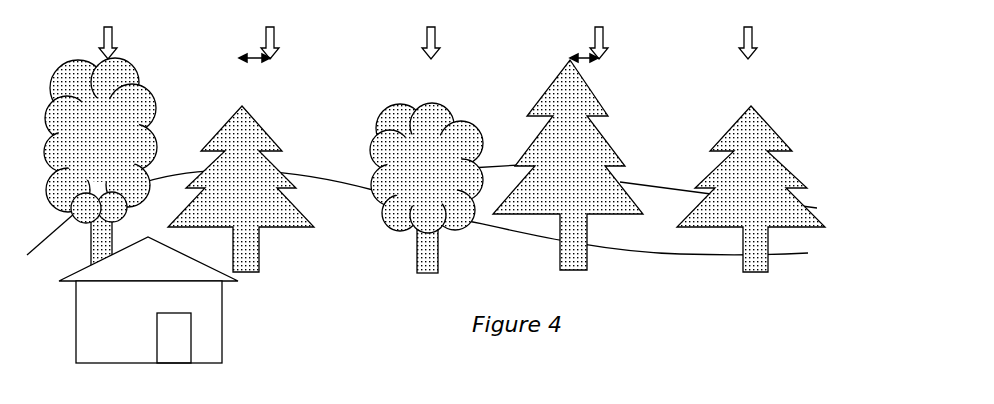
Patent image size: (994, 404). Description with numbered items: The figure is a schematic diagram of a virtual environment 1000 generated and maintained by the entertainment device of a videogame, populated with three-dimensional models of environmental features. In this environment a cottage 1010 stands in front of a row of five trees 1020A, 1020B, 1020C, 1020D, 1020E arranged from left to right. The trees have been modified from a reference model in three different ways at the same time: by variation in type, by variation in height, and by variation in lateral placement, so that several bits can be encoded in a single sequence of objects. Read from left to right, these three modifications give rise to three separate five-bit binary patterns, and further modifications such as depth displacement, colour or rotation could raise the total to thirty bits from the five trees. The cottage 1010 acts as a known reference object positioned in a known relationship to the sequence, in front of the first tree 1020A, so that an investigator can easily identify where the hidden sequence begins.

The virtual environment 1000 is at (664, 40).
The cottage 1010 is at (228, 322).
The first tree 1020A is at (100, 164).
The tree 1020B is at (241, 189).
The tree 1020C is at (426, 188).
The tree 1020D is at (568, 165).
The tree 1020E is at (751, 189).